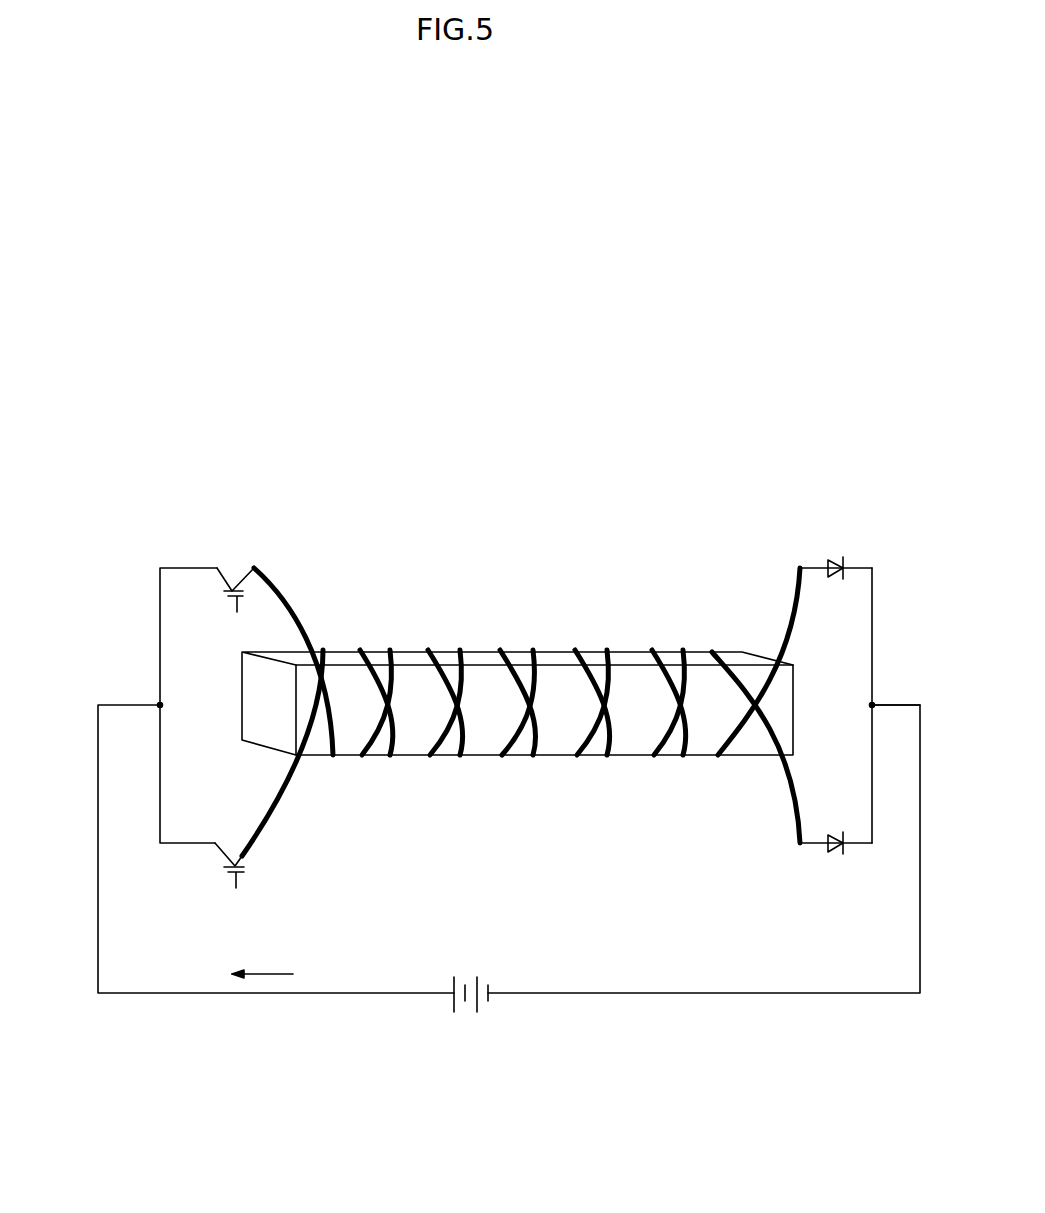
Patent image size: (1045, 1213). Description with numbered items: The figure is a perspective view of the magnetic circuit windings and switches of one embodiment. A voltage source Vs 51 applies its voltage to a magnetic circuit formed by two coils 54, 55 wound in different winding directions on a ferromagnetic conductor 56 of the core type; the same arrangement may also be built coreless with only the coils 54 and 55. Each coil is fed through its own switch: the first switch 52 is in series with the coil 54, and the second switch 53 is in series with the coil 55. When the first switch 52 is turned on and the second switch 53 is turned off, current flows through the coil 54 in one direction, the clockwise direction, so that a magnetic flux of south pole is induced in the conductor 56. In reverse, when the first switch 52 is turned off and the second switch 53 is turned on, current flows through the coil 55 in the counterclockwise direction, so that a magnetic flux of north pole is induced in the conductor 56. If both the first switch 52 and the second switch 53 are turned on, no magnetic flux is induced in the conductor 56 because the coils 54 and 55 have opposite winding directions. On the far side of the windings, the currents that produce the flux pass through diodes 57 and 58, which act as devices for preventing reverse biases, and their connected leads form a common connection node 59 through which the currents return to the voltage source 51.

The voltage source Vs 51 is at (478, 1010).
The S1 switch 52 is at (219, 567).
The S2 switch 53 is at (243, 872).
The coil 54 is at (290, 597).
The coil 55 is at (293, 793).
The ferromagnetic conductor 56 is at (242, 683).
The diode 57 is at (838, 559).
The diode 58 is at (833, 852).
The common connection node 59 is at (874, 704).